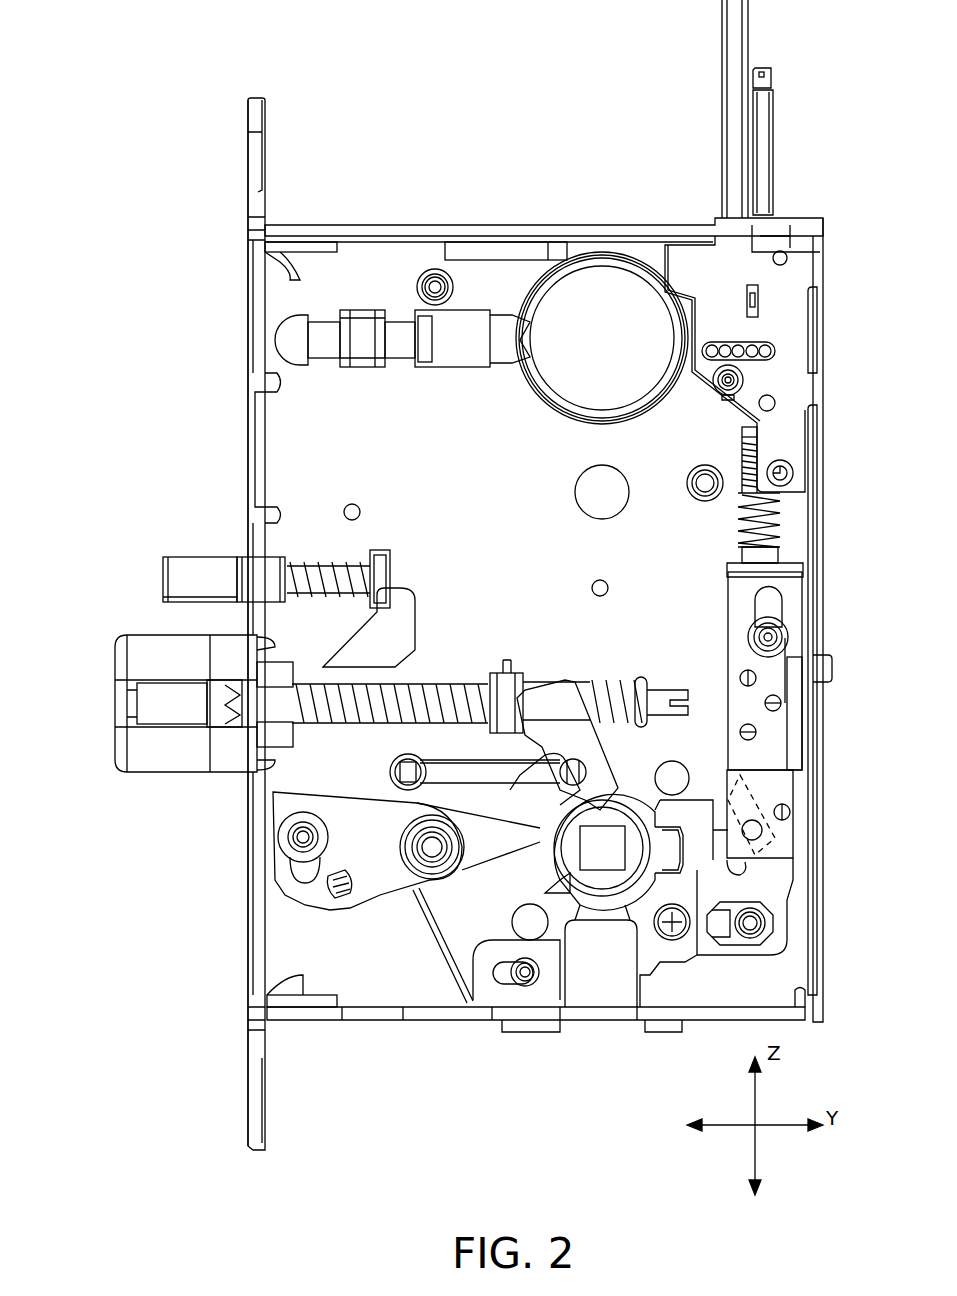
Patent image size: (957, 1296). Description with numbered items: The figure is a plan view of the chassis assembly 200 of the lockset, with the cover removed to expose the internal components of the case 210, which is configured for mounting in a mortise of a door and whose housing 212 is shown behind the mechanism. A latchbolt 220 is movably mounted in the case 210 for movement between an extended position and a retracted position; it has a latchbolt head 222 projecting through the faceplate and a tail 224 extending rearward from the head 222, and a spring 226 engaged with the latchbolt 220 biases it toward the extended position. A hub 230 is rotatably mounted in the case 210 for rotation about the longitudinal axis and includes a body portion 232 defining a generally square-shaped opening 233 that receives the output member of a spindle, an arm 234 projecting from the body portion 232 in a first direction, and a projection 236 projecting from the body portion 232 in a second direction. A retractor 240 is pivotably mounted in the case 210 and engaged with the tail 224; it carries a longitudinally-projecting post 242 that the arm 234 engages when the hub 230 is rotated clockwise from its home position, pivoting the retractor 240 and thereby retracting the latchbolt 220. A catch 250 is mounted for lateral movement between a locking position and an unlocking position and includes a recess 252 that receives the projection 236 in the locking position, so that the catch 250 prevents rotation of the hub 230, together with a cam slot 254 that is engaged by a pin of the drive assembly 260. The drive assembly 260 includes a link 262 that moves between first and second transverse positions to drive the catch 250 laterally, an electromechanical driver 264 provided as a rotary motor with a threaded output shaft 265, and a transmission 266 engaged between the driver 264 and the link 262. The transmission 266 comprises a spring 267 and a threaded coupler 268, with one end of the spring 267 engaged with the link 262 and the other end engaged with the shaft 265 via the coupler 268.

The chassis assembly 200 is at (205, 48).
The case 210 is at (172, 218).
The housing 212 is at (520, 225).
The latchbolt 220 is at (105, 612).
The latchbolt head 222 is at (158, 772).
The tail 224 is at (432, 690).
The spring 226 is at (376, 725).
The hub 230 is at (530, 872).
The body portion 232 is at (600, 900).
The opening 233 is at (585, 835).
The arm 234 is at (426, 831).
The projection 236 is at (645, 818).
The retractor 240 is at (588, 738).
The post 242 is at (575, 763).
The catch 250 is at (788, 883).
The recess 252 is at (692, 805).
The cam slot 254 is at (765, 671).
The drive assembly 260 is at (632, 445).
The link 262 is at (793, 612).
The electromechanical driver 264 is at (713, 398).
The threaded output shaft 265 is at (740, 492).
The transmission 266 is at (795, 521).
The spring 267 is at (740, 530).
The threaded coupler 268 is at (740, 430).